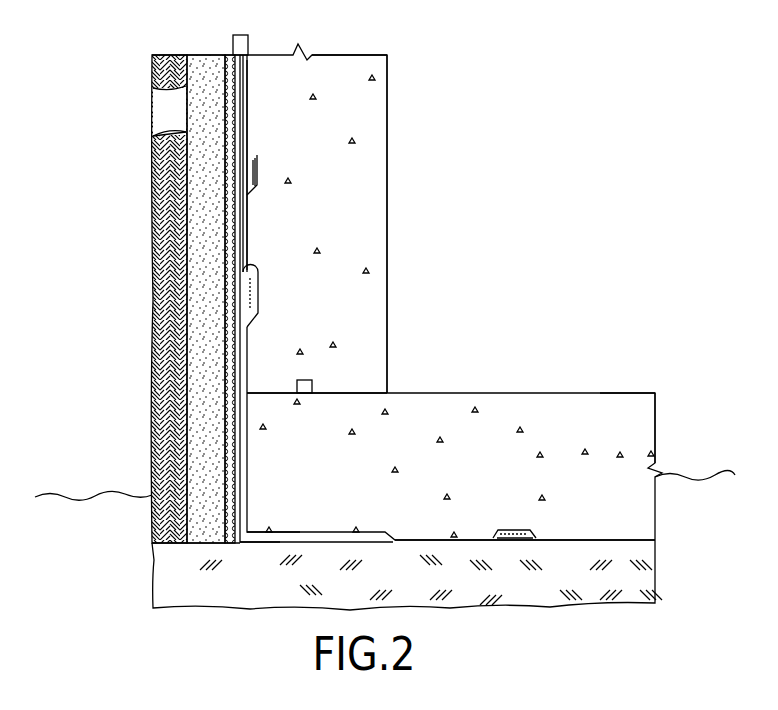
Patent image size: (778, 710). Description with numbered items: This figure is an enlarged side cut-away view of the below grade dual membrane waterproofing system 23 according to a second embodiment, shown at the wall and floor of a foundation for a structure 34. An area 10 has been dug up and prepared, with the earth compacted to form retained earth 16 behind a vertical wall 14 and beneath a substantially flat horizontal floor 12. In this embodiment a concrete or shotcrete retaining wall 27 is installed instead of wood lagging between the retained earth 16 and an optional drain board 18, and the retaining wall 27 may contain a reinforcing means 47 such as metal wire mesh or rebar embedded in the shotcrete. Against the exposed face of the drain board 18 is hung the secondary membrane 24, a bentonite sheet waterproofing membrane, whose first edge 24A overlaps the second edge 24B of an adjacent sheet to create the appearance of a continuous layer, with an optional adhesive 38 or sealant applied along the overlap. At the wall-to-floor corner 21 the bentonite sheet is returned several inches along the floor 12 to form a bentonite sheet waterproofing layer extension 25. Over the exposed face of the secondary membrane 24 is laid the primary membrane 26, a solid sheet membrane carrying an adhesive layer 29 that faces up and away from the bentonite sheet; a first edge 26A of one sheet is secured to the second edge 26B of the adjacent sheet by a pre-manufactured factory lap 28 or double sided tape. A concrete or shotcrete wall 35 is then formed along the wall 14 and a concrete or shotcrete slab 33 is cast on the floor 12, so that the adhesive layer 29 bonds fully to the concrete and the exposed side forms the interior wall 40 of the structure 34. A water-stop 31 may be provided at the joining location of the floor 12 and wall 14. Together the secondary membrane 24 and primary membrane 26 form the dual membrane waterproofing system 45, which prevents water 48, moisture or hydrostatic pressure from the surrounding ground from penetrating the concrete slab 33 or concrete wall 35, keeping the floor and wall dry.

The area 10 is at (165, 548).
The floor 12 is at (572, 353).
The wall 14 is at (449, 159).
The retained earth 16 is at (152, 80).
The drain board 18 is at (238, 70).
The wall-to-floor corner 21 is at (282, 514).
The dual membrane waterproofing system 23 is at (568, 138).
The secondary membrane 24 is at (240, 136).
The first edge 24A is at (253, 297).
The second edge 24B is at (245, 306).
The bentonite sheet waterproofing layer extension 25 is at (268, 548).
The primary membrane 26 is at (257, 104).
The first edge 26A is at (252, 172).
The second edge 26B is at (258, 181).
The concrete or shotcrete retaining wall 27 is at (193, 252).
The factory lap 28 is at (242, 177).
The adhesive layer 29 is at (252, 424).
The water-stop 31 is at (313, 384).
The concrete or shotcrete slab 33 is at (652, 423).
The structure 34 is at (388, 66).
The concrete or shotcrete wall 35 is at (380, 110).
The adhesive 38 is at (248, 268).
The interior wall 40 is at (388, 200).
The dual membrane waterproofing system 45 is at (245, 34).
The reinforcing means 47 is at (190, 130).
The water 48 is at (732, 475).